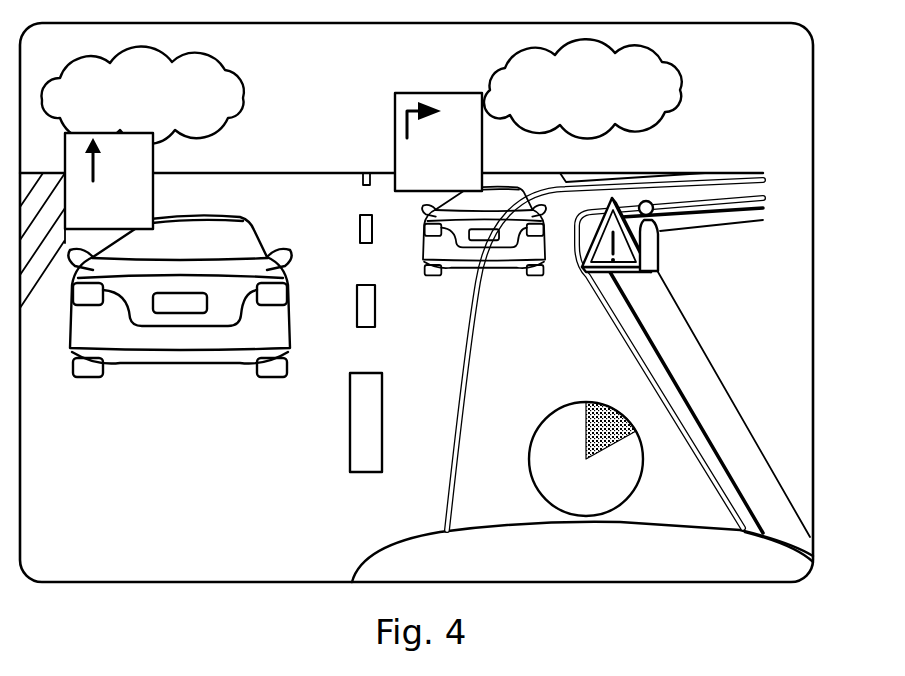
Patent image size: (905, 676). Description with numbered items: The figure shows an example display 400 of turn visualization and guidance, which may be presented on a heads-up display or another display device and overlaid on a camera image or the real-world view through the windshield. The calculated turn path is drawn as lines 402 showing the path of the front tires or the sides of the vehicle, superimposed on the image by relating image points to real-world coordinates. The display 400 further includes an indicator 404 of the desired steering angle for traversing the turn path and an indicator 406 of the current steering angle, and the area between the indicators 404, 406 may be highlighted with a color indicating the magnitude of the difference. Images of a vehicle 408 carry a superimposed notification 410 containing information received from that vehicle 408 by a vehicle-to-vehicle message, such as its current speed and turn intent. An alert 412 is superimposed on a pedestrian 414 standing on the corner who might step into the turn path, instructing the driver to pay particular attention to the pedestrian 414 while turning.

The display 400 is at (814, 273).
The lines 402 is at (576, 429).
The indicator of a desired steering angle 404 is at (620, 447).
The indicator of a current steering angle 406 is at (583, 415).
The vehicle 408 is at (204, 216).
The notification 410 is at (154, 163).
The alert 412 is at (578, 272).
The pedestrian 414 is at (663, 255).